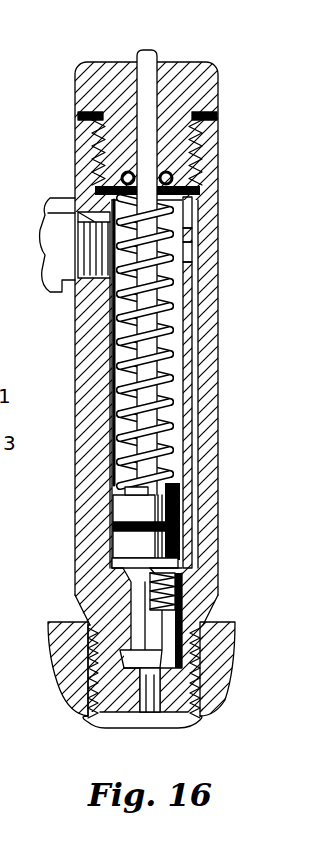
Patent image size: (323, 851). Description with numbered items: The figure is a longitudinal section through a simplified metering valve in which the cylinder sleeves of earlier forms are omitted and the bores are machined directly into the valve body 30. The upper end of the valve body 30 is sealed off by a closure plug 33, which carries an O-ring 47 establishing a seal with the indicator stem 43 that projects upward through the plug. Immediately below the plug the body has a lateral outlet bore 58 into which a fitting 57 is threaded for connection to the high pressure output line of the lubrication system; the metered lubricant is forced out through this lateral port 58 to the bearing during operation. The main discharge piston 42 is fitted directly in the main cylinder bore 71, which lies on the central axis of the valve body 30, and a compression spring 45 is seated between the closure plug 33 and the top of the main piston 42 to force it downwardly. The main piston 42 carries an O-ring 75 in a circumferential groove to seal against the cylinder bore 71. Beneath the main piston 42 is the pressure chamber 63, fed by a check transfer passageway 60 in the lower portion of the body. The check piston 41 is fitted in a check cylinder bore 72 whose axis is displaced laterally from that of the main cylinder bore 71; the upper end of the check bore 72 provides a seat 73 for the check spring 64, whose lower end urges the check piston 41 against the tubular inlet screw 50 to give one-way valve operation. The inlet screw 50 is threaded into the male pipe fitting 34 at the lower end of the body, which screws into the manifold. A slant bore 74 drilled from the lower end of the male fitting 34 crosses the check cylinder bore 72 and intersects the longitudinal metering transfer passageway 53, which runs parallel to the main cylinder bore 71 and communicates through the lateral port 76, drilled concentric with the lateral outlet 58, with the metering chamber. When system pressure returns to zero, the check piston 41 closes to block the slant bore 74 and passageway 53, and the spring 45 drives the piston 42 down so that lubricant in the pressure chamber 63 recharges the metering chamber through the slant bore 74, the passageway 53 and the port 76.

The valve body 30 is at (218, 382).
The closure plug 33 is at (216, 84).
The male fitting 34 is at (192, 652).
The check piston 41 is at (100, 644).
The main piston 42 is at (165, 497).
The indicator stem 43 is at (150, 56).
The compression spring 45 is at (203, 256).
The O-ring 47 is at (200, 178).
The tubular inlet screw 50 is at (222, 698).
The metering transfer passageway 53 is at (193, 298).
The fitting 57 is at (60, 247).
The lateral outlet bore 58 is at (77, 208).
The check transfer passageway 60 is at (126, 588).
The pressure chamber 63 is at (118, 563).
The check spring 64 is at (178, 597).
The main cylinder bore 71 is at (105, 318).
The check cylinder bore 72 is at (157, 638).
The seat 73 is at (185, 562).
The slant bore 74 is at (143, 657).
The O-ring 75 is at (168, 527).
The lateral port 76 is at (186, 250).